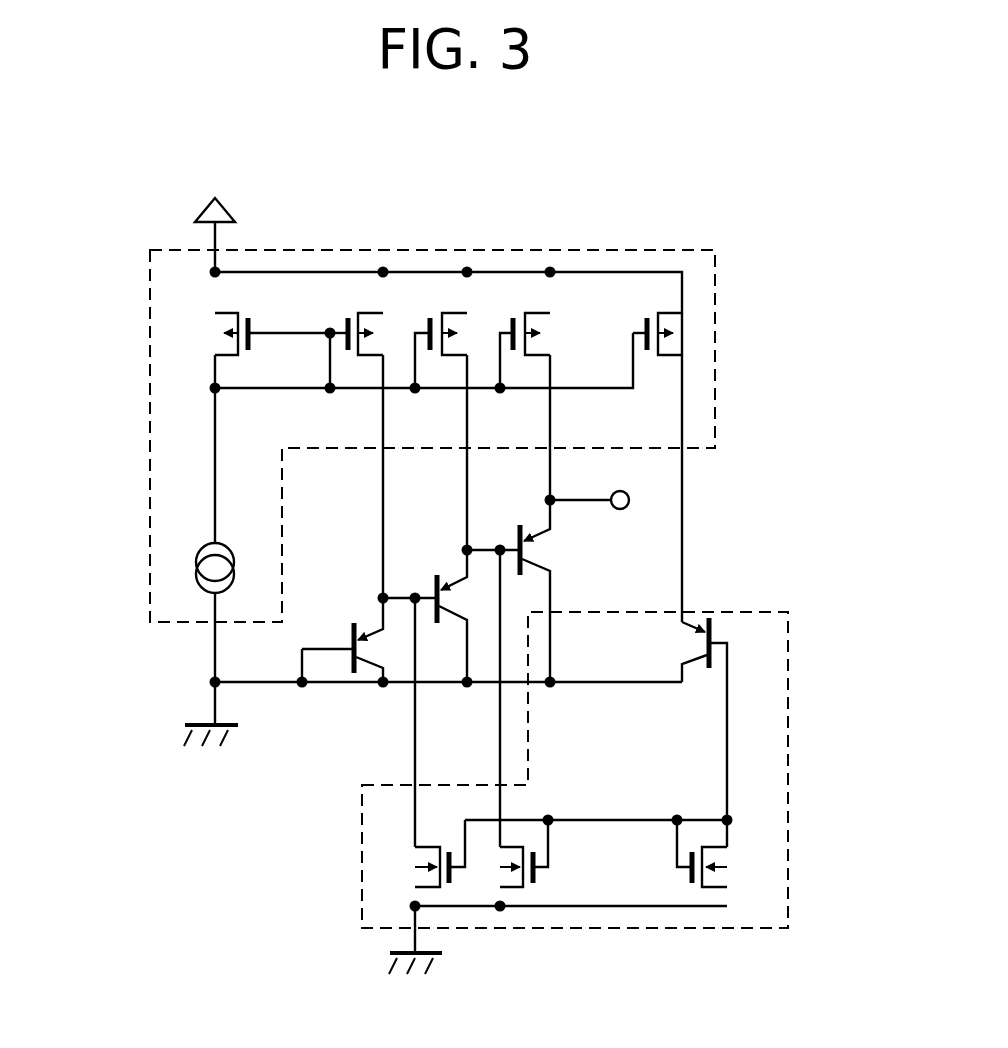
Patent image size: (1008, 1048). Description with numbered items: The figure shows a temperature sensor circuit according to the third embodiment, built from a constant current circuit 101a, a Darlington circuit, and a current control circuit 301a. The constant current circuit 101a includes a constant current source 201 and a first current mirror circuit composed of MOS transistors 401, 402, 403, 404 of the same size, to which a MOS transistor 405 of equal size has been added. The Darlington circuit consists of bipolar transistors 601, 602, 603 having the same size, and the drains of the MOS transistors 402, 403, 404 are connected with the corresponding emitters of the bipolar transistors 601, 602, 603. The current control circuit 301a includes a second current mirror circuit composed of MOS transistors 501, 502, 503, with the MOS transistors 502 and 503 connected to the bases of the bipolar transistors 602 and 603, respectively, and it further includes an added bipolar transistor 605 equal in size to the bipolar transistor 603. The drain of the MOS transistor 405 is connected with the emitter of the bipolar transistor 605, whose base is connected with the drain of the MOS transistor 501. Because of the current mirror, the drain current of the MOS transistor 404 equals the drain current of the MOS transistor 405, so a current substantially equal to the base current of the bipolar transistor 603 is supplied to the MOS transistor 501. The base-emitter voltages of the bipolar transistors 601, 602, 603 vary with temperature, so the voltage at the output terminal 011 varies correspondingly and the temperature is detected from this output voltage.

The constant current circuit 101a is at (717, 347).
The current control circuit 301a is at (785, 930).
The constant current source 201 is at (195, 546).
The MOS transistor 401 is at (190, 338).
The MOS transistor 402 is at (358, 305).
The MOS transistor 403 is at (447, 305).
The MOS transistor 404 is at (553, 338).
The MOS transistor 405 is at (665, 305).
The MOS transistor 501 is at (707, 892).
The MOS transistor 502 is at (410, 873).
The MOS transistor 503 is at (527, 892).
The bipolar transistor 601 is at (368, 673).
The bipolar transistor 602 is at (445, 630).
The bipolar transistor 603 is at (552, 553).
The bipolar transistor 605 is at (690, 668).
The output terminal 011 is at (628, 507).